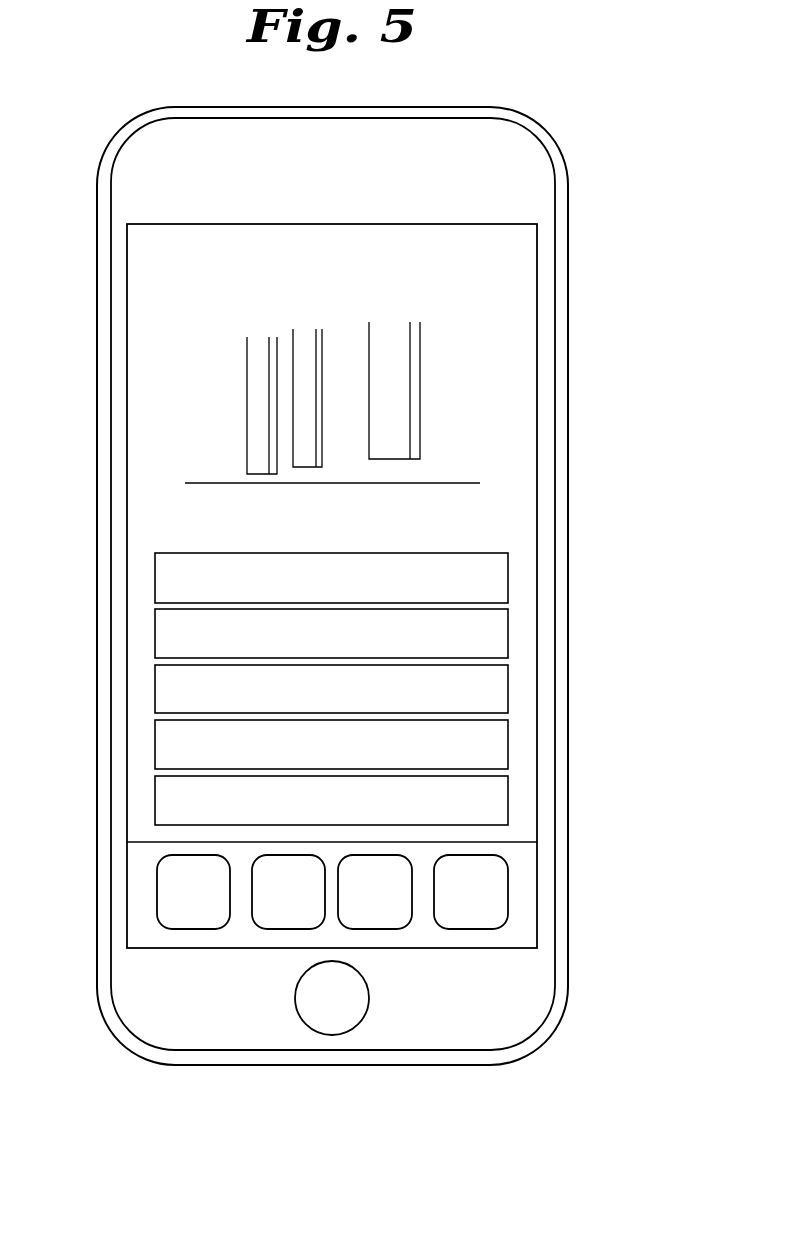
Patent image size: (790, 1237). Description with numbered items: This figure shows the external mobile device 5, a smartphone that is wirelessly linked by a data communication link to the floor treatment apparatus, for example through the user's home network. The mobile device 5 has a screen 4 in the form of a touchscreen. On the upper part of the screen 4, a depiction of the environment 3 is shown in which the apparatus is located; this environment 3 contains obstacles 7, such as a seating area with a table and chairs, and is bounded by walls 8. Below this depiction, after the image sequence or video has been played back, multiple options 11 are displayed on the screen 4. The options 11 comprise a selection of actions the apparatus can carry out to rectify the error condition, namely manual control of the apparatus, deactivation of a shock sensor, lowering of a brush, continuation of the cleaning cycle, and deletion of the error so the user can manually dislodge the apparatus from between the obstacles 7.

The environment 3 is at (207, 374).
The screen 4 is at (148, 478).
The mobile device 5 is at (560, 116).
The obstacles 7 is at (299, 424).
The walls 8 is at (464, 343).
The options 11 is at (485, 569).